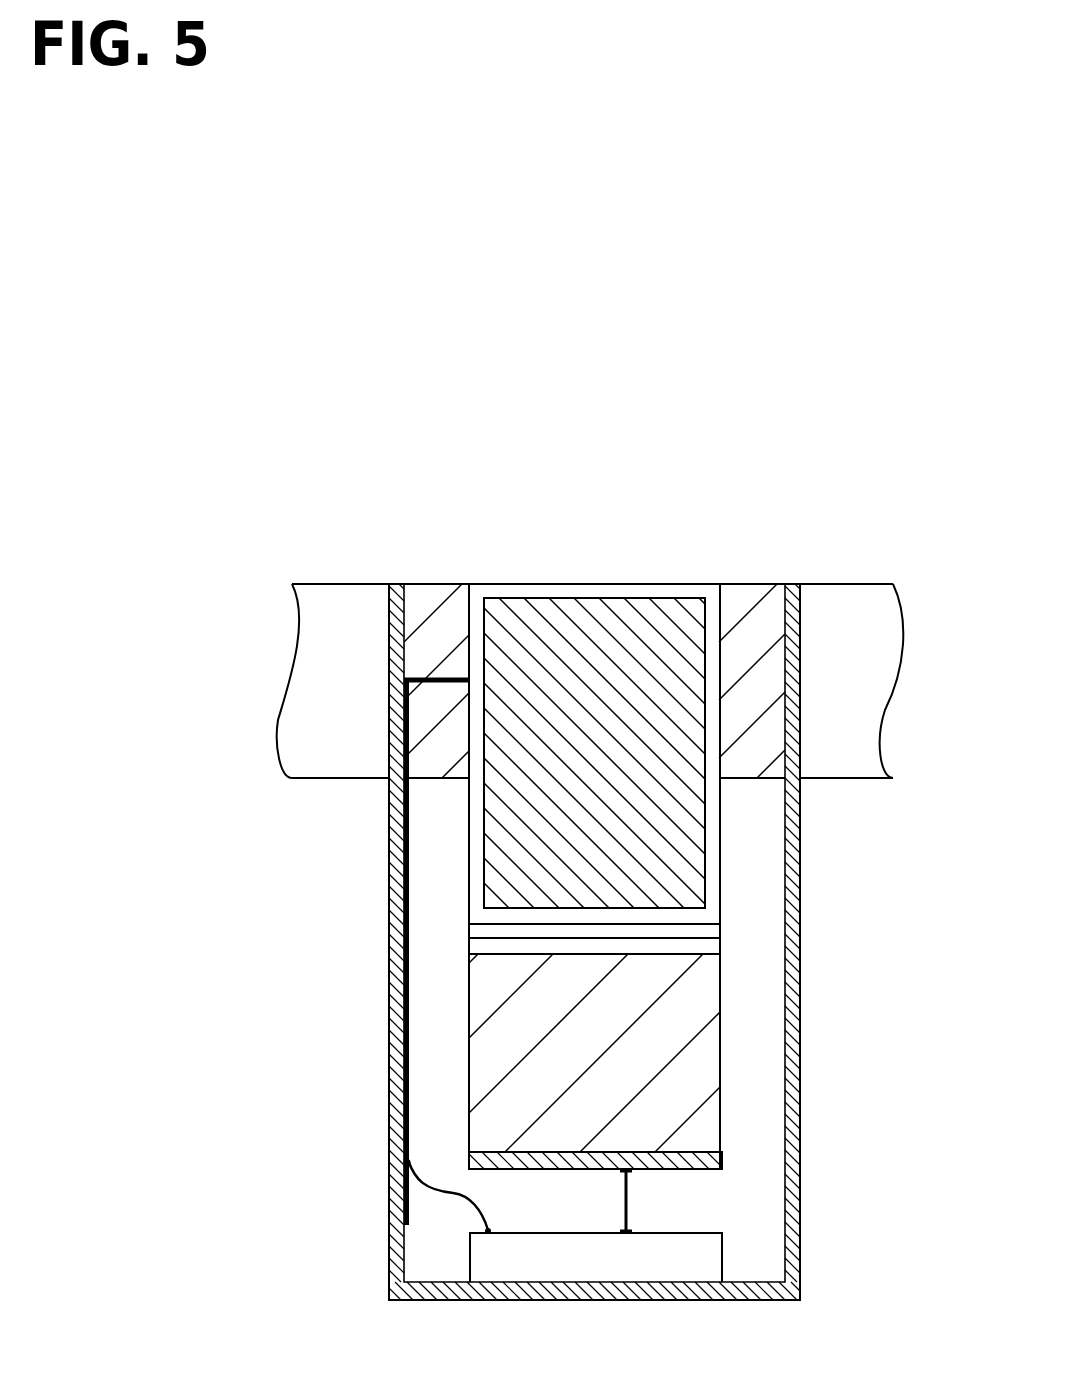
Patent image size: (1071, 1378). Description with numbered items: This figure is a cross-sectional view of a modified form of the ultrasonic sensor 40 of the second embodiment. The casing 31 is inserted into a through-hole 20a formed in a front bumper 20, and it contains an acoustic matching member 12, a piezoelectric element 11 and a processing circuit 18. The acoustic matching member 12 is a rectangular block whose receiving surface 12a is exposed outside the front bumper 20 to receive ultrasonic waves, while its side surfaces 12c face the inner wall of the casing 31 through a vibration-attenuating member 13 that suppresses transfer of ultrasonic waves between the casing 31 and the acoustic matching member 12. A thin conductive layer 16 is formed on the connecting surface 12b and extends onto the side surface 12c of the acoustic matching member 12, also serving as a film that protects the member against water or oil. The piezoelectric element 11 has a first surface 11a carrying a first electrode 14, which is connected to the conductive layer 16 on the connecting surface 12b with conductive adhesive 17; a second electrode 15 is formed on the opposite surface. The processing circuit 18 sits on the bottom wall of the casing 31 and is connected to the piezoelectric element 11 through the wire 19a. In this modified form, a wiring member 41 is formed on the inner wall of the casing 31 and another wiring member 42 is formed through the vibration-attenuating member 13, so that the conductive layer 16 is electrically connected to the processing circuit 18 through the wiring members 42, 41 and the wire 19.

The piezoelectric element 11 is at (710, 1083).
The first surface 11a is at (648, 958).
The acoustic matching member 12 is at (693, 832).
The receiving surface 12a is at (618, 590).
The connecting surface 12b is at (497, 908).
The side surfaces 12c is at (705, 628).
The vibration-attenuating member 13 is at (442, 590).
The first electrode 14 is at (712, 956).
The second electrode 15 is at (710, 1162).
The conductive layer 16 is at (713, 886).
The conductive adhesive 17 is at (713, 934).
The processing circuit 18 is at (483, 1253).
The wire 19 is at (425, 1195).
The wire 19a is at (630, 1195).
The front bumper 20 is at (362, 584).
The through-hole 20a is at (383, 727).
The casing 31 is at (793, 1240).
The ultrasonic sensor 40 is at (852, 538).
The wiring member 41 is at (404, 1062).
The wiring member 42 is at (407, 663).